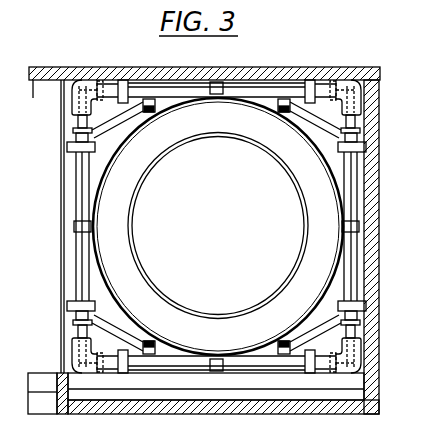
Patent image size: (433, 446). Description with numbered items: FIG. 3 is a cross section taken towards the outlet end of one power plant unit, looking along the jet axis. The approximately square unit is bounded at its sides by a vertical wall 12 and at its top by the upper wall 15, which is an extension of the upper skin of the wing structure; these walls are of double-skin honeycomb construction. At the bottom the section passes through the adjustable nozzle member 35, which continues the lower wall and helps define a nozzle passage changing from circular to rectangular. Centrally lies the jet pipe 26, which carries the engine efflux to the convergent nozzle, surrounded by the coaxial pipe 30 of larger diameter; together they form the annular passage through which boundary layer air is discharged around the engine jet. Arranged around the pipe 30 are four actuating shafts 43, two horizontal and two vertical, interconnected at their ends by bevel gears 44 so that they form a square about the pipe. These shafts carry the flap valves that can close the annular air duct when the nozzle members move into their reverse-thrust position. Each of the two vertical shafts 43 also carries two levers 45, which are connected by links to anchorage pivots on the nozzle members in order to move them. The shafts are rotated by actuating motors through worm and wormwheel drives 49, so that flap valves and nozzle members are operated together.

The vertical wall 12 is at (378, 222).
The upper wall 15 is at (158, 73).
The jet pipe 26 is at (142, 187).
The coaxial pipe 30 is at (119, 144).
The nozzle member 35 is at (250, 404).
The actuating shaft 43 is at (256, 88).
The bevel gear 44 is at (61, 98).
The lever 45 is at (132, 116).
The worm and wormwheel drive 49 is at (99, 74).